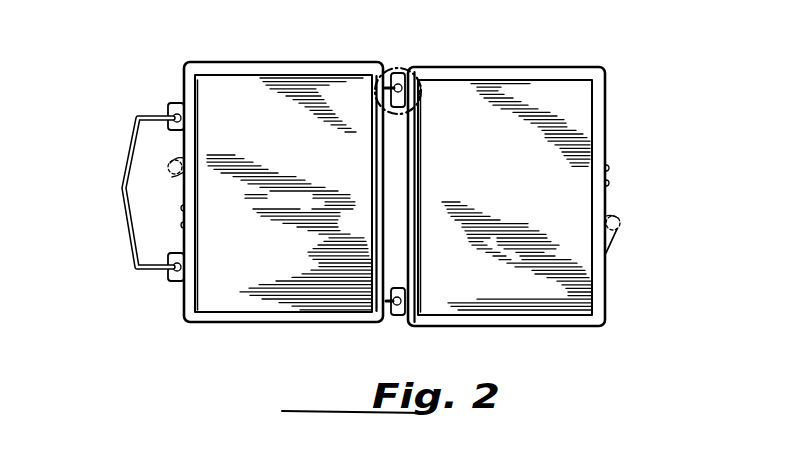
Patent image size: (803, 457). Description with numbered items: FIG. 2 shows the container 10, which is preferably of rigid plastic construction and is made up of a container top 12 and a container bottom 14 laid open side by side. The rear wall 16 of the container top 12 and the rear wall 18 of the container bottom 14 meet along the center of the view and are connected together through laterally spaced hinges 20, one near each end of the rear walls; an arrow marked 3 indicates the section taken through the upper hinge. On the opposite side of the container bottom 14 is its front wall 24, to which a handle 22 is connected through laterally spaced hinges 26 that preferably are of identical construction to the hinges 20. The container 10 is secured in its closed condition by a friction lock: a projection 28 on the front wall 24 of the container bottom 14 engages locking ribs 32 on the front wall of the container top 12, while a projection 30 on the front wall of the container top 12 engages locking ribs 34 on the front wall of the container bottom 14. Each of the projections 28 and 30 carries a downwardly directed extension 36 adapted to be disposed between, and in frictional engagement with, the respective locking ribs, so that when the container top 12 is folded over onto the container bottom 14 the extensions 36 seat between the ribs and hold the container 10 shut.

The container 10 is at (393, 185).
The container top 12 is at (517, 64).
The container bottom 14 is at (254, 168).
The rear wall 16 is at (404, 172).
The rear wall 18 is at (388, 158).
The hinges 20 is at (395, 62).
The handle 22 is at (133, 258).
The front wall 24 is at (183, 88).
The hinges 26 is at (183, 133).
The projection 28 is at (172, 177).
The projection 30 is at (620, 224).
The locking ribs 32 is at (607, 183).
The locking ribs 34 is at (181, 225).
The downwardly directed extension 36 is at (168, 169).
The section view indicator for FIG. 3 is at (401, 66).